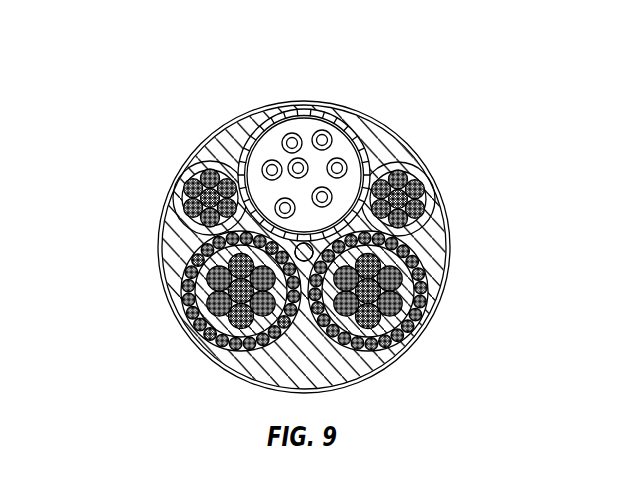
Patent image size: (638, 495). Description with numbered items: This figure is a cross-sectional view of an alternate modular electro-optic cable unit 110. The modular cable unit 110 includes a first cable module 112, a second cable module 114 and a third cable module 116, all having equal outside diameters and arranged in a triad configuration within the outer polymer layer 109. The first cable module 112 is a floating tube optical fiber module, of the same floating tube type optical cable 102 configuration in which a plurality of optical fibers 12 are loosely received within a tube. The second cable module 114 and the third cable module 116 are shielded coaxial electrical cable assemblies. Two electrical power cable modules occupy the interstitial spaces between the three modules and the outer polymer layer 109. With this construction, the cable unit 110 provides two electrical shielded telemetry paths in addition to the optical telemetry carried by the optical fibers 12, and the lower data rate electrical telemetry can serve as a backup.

The modular electro-optic cable unit 110 is at (414, 113).
The outer polymer layer 109 is at (238, 366).
The first cable module 112 is at (262, 114).
The first cable module 102 is at (334, 122).
The optical fibers 12 is at (284, 134).
The second cable module 114 is at (182, 287).
The third cable module 116 is at (440, 304).